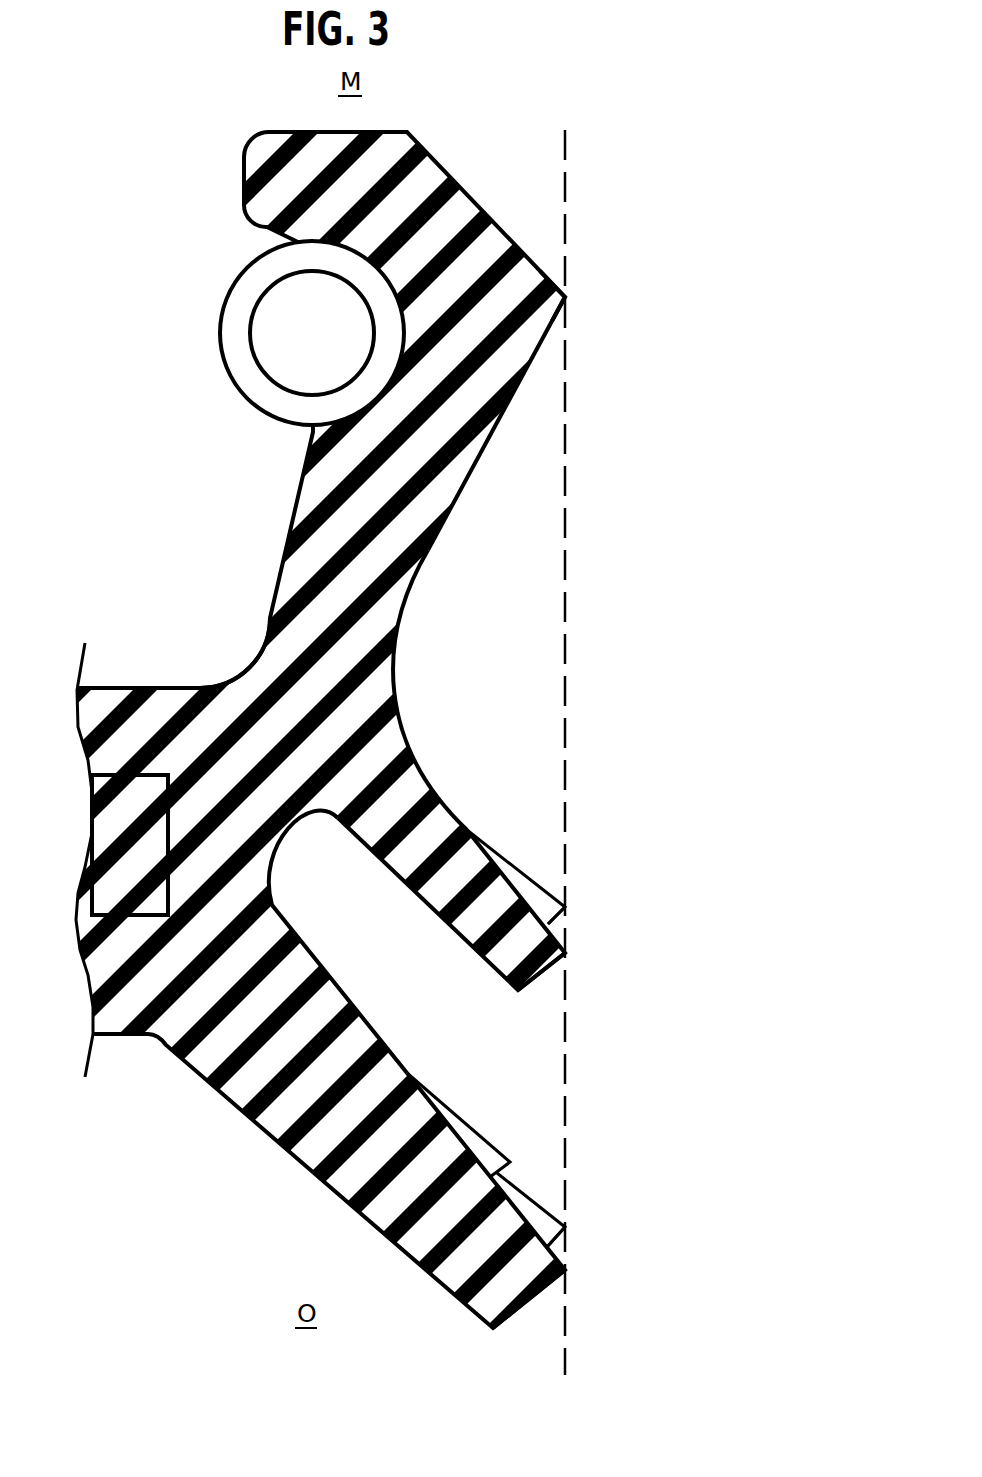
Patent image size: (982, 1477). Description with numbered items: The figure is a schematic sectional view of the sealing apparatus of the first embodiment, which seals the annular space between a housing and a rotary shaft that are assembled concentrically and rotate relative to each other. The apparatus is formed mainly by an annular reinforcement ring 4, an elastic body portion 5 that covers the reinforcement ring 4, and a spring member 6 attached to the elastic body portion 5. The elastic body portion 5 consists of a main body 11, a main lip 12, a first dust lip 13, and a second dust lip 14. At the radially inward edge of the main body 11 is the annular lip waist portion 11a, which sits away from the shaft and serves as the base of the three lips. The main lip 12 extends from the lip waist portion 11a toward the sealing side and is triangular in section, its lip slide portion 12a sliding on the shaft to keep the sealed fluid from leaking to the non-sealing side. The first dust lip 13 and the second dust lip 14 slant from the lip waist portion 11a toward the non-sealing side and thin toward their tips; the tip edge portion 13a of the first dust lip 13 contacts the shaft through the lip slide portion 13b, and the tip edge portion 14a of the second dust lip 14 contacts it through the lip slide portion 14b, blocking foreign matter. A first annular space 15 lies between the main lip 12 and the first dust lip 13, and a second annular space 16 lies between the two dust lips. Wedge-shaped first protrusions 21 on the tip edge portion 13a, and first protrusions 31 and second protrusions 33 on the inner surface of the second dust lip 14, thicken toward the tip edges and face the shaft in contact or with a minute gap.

The reinforcement ring 4 is at (110, 842).
The elastic body portion 5 is at (123, 1093).
The spring member 6 is at (219, 332).
The main body 11 is at (120, 742).
The lip waist portion 11a is at (240, 692).
The main lip 12 is at (462, 213).
The lip slide portion 12a is at (566, 297).
The first dust lip 13 is at (437, 818).
The tip edge portion 13a is at (520, 943).
The lip slide portion 13b is at (565, 955).
The second dust lip 14 is at (317, 1139).
The tip edge portion 14a is at (520, 1270).
The lip slide portion 14b is at (565, 1270).
The first annular space 15 is at (512, 669).
The second annular space 16 is at (475, 1043).
The first protrusion 21 is at (537, 897).
The first protrusion 31 is at (530, 1210).
The second protrusion 33 is at (480, 1148).